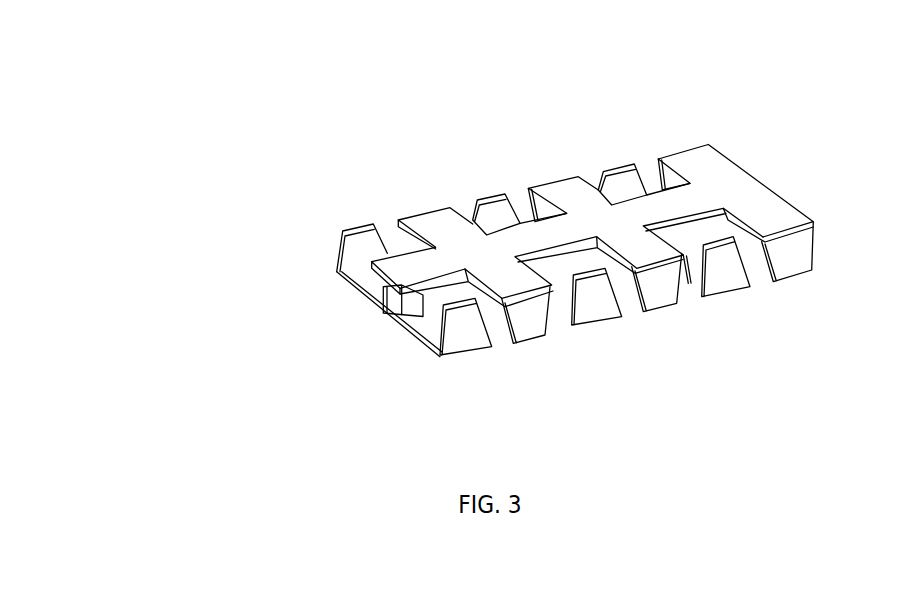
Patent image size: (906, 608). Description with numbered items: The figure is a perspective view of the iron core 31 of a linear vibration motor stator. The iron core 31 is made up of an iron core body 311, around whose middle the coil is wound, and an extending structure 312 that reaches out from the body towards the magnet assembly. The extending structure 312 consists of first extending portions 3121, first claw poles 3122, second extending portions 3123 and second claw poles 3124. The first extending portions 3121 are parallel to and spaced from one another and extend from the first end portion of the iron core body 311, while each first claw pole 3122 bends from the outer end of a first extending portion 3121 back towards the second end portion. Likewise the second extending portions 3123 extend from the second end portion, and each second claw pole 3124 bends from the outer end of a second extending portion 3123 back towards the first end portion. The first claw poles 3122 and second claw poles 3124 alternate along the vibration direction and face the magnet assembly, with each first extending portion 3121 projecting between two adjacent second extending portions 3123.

The iron core 31 is at (527, 48).
The iron core body 311 is at (393, 298).
The extending structure 312 is at (102, 180).
The first extending portion 3121 is at (440, 222).
The first claw pole 3122 is at (530, 312).
The second extending portion 3123 is at (692, 270).
The second claw pole 3124 is at (495, 211).